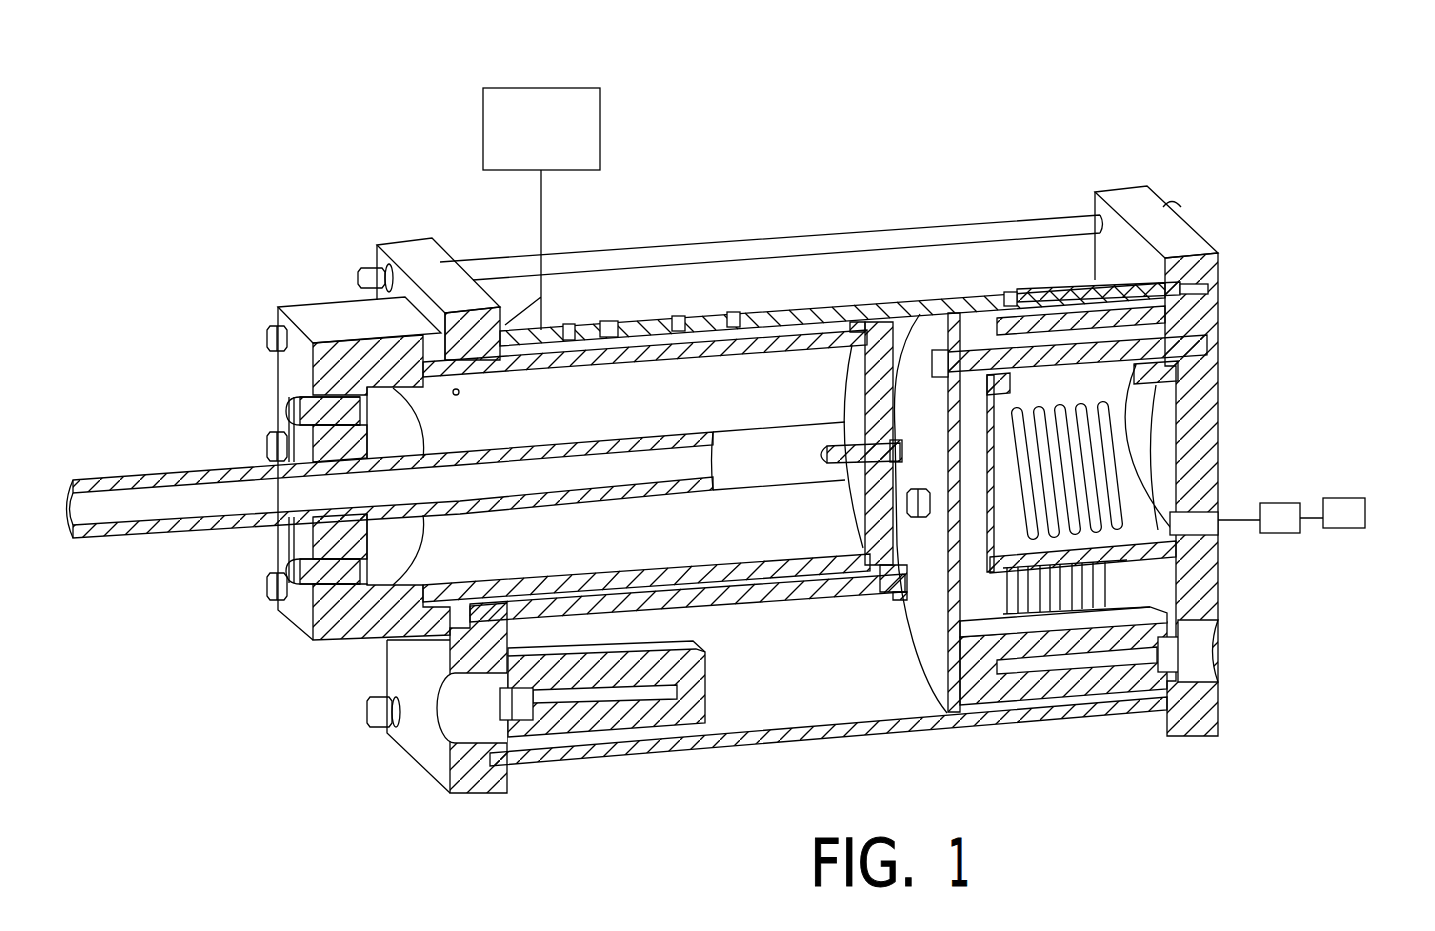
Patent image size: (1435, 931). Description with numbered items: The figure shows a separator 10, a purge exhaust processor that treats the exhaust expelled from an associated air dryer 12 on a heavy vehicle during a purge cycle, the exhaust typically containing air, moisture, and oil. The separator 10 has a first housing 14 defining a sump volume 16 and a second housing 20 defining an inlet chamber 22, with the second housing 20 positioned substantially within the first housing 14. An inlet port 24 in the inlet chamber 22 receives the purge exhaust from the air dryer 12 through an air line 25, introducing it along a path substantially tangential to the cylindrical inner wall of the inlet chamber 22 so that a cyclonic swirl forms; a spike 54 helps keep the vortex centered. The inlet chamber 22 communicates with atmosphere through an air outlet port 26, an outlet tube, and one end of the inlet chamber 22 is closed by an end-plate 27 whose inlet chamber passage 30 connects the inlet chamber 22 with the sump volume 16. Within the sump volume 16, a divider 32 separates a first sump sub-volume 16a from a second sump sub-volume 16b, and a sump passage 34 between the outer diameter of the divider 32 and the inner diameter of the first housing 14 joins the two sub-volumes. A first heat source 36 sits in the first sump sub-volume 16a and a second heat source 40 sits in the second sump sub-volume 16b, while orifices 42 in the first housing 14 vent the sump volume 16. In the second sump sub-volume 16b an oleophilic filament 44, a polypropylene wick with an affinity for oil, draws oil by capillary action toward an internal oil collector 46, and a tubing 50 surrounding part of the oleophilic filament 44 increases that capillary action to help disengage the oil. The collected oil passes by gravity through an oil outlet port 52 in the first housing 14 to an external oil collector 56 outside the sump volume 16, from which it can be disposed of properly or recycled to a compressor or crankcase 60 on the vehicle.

The separator 10 is at (962, 143).
The air dryer 12 is at (513, 88).
The first housing 14 is at (630, 755).
The sump volume 16 is at (818, 699).
The first sump sub-volume 16a is at (760, 707).
The second sump sub-volume 16b is at (1037, 707).
The second housing 20 is at (372, 355).
The inlet chamber 22 is at (638, 403).
The inlet port 24 is at (460, 395).
The air line 25 is at (541, 226).
The air outlet port 26 is at (190, 538).
The end-plate 27 is at (863, 372).
The inlet chamber passage 30 is at (865, 552).
The divider 32 is at (958, 668).
The sump passage 34 is at (940, 663).
The first heat source 36 is at (565, 715).
The second heat source 40 is at (1103, 682).
The orifices 42 is at (612, 321).
The oleophilic filament 44 is at (1103, 578).
The internal oil collector 46 is at (1168, 500).
The tubing 50 is at (1107, 468).
The oil outlet port 52 is at (1197, 517).
The spike 54 is at (836, 447).
The external oil collector 56 is at (1277, 530).
The compressor or crankcase 60 is at (1348, 525).